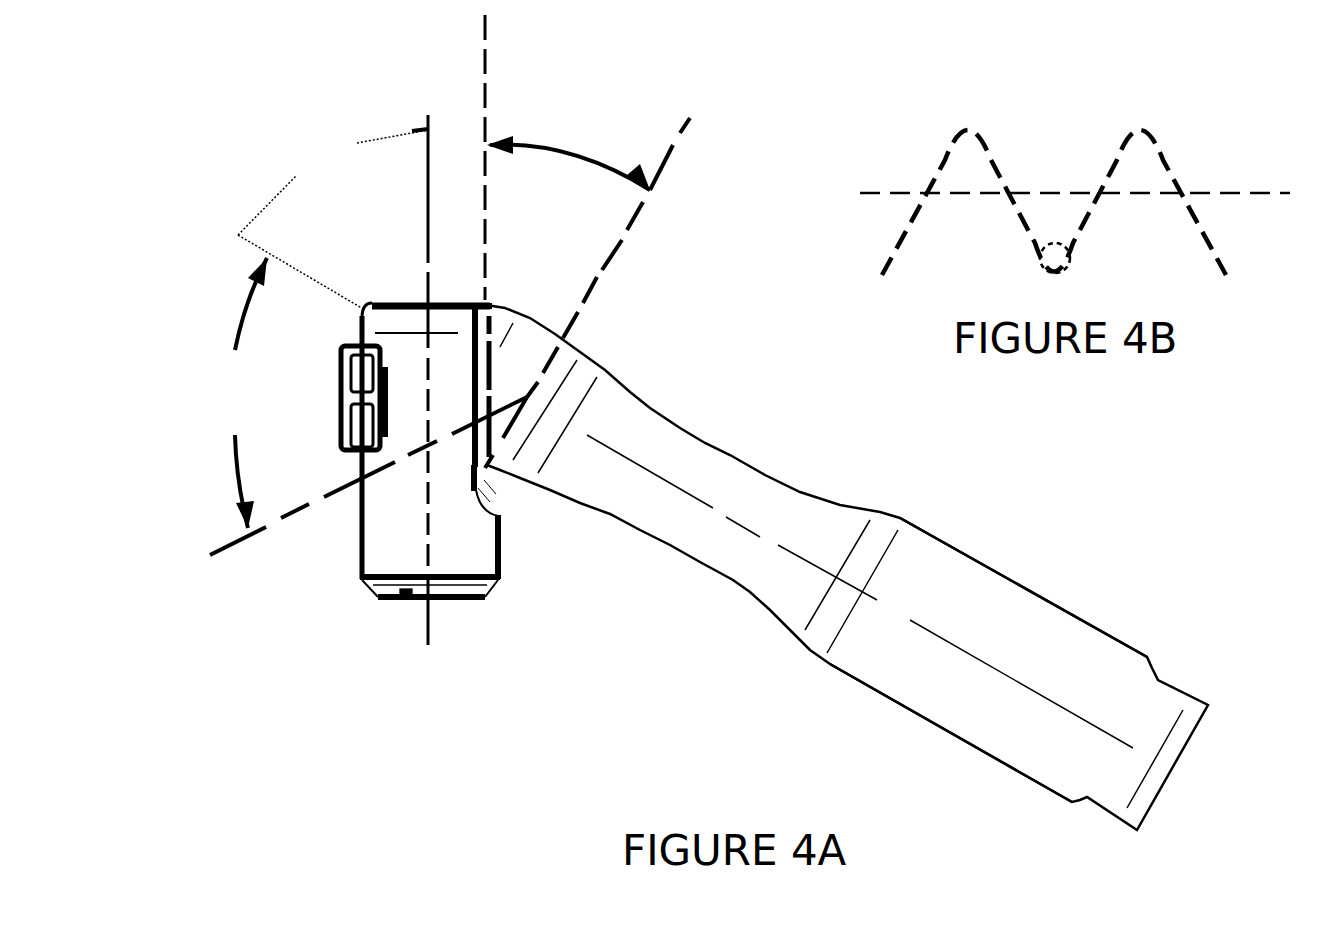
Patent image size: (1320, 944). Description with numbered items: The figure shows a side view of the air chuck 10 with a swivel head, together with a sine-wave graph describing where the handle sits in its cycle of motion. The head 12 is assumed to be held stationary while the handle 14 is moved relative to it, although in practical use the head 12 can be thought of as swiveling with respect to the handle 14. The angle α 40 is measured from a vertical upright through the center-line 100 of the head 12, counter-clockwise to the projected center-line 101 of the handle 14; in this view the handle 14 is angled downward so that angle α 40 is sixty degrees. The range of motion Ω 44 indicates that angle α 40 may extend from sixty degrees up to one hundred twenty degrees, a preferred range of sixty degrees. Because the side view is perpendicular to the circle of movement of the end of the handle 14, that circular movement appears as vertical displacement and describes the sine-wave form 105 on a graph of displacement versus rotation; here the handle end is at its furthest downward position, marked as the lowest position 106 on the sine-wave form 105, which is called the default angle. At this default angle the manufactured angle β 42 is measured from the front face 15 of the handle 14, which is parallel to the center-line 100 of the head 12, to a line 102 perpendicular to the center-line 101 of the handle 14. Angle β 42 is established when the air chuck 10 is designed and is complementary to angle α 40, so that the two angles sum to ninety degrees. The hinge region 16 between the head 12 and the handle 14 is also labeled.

In FIG. 4A, the air chuck 10 is at (643, 383).
In FIG. 4A, the head 12 is at (390, 513).
In FIG. 4A, the handle 14 is at (822, 528).
In FIG. 4A, the front face 15 is at (466, 303).
In FIG. 4A, the hinge joint 16 is at (488, 467).
In FIG. 4A, the angle α 40 is at (293, 146).
In FIG. 4A, the angle β 42 is at (596, 130).
In FIG. 4A, the range of motion Ω 44 is at (203, 402).
In FIG. 4A, the center-line of the head 100 is at (420, 612).
In FIG. 4A, the projected center-line of the handle 101 is at (677, 490).
In FIG. 4A, the line perpendicular to the handle center line 102 is at (600, 273).
In FIG. 4B, the sine-wave form 105 is at (890, 193).
In FIG. 4B, the lowest position 106 is at (1063, 267).